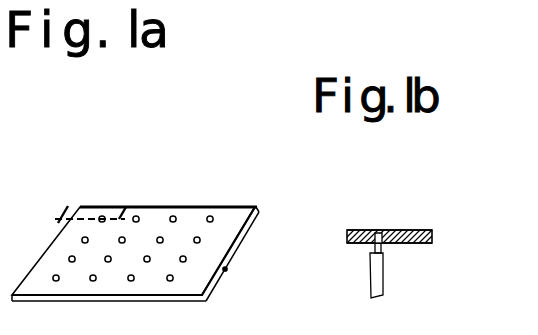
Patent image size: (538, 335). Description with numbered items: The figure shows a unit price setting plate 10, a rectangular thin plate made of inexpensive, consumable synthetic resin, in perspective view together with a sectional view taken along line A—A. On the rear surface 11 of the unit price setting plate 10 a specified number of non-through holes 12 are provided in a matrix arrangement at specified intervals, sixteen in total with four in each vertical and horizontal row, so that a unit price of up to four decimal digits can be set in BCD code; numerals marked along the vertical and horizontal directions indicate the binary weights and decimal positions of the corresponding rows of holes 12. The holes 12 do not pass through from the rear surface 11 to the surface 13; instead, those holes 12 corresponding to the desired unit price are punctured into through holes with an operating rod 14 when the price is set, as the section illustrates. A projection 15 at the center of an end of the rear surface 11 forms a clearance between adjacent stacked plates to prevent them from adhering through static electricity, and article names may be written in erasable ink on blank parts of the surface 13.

In FIG. 1A, the unit price setting plate 10 is at (233, 208).
In FIG. 1B, the unit price setting plate 10 is at (363, 230).
In FIG. 1B, the rear surface 11 is at (417, 244).
In FIG. 1B, the non-through holes 12 is at (383, 247).
In FIG. 1A, the surface 13 is at (155, 218).
In FIG. 1B, the surface 13 is at (416, 229).
In FIG. 1B, the operating rod 14 is at (375, 279).
In FIG. 1A, the projection 15 is at (226, 269).